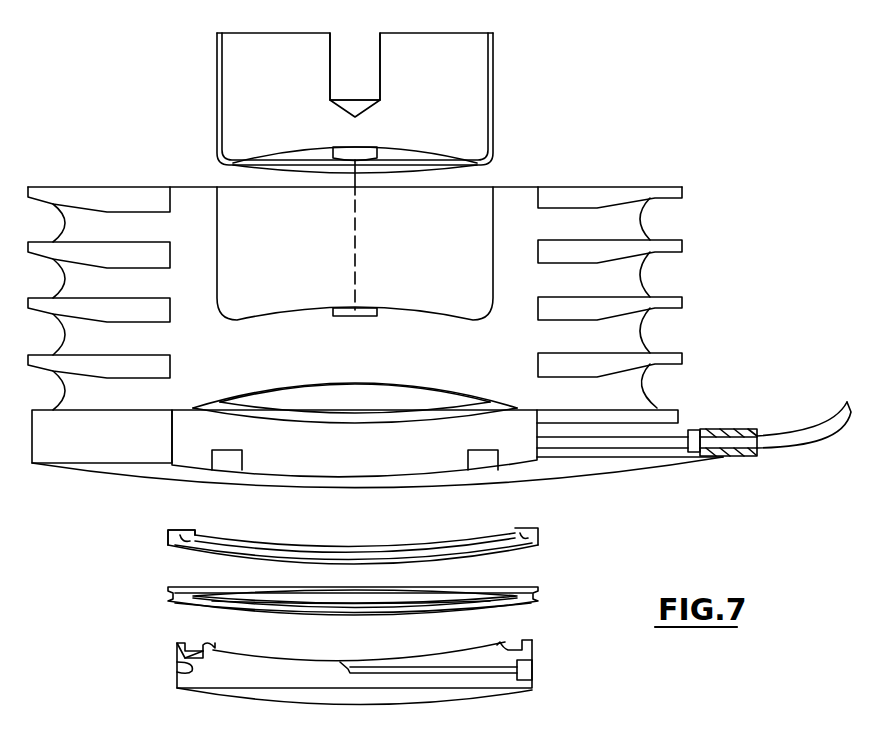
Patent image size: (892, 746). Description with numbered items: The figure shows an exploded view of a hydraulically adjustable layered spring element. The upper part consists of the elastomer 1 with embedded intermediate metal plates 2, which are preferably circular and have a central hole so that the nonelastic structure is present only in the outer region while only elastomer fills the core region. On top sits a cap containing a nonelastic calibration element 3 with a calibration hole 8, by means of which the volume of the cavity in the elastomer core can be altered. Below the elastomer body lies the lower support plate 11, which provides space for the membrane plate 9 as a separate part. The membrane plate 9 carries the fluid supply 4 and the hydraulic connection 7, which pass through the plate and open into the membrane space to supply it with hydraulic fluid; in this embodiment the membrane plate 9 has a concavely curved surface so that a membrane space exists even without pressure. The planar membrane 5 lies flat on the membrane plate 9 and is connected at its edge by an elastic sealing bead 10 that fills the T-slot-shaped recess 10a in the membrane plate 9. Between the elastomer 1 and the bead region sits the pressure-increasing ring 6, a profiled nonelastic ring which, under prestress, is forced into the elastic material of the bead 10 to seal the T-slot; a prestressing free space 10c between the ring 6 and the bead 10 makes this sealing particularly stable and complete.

The elastomer layer 1 is at (628, 394).
The intermediate metal plates 2 is at (603, 305).
The calibration element 3 is at (496, 95).
The fluid supply 4 is at (534, 672).
The planar membrane 5 is at (237, 590).
The pressure-increasing ring 6 is at (538, 532).
The hydraulic connection 7 is at (653, 445).
The calibration hole 8 is at (362, 38).
The membrane plate 9 is at (257, 690).
The elastic sealing bead 10 is at (538, 607).
The T-slot-shaped recess 10a is at (177, 671).
The prestressing free space 10c is at (182, 547).
The lower support plate 11 is at (127, 443).